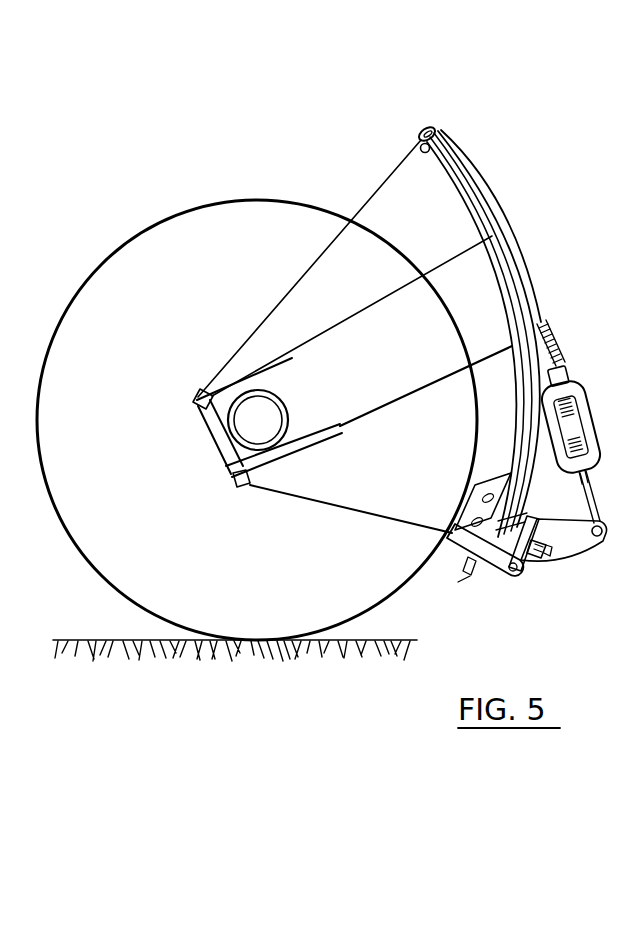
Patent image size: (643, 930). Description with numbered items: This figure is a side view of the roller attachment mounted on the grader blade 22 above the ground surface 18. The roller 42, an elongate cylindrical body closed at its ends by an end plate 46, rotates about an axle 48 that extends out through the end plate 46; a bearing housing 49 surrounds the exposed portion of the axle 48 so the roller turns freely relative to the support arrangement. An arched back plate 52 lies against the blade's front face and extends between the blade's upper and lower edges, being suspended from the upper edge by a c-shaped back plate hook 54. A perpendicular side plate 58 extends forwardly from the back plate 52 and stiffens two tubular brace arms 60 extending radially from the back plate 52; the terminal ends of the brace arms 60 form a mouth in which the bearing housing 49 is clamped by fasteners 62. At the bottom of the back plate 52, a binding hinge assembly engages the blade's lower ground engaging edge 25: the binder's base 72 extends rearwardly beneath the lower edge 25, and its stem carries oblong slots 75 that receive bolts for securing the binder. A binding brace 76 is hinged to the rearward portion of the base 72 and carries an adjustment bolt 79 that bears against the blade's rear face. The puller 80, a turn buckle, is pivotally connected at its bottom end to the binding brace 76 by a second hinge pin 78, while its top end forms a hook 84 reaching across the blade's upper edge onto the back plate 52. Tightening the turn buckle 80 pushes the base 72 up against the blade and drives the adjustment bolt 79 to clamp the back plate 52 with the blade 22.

The roller 42 is at (200, 195).
The end plate 46 is at (173, 340).
The ground surface 18 is at (80, 640).
The side plate 58 is at (388, 270).
The axle 48 is at (262, 400).
The bearing housing 49 is at (292, 428).
The fasteners 62 is at (222, 440).
The brace arms 60 is at (418, 353).
The back plate hook 54 is at (443, 130).
The hook 84 is at (426, 154).
The back plate 52 is at (480, 200).
The grader blade 22 is at (490, 225).
The puller 80 is at (538, 265).
The oblong slots 75 is at (480, 490).
The base 72 is at (477, 568).
The lower ground engaging edge 25 is at (468, 578).
The adjustment bolt 79 is at (540, 558).
The binding brace 76 is at (570, 545).
The second hinge pin 78 is at (601, 543).